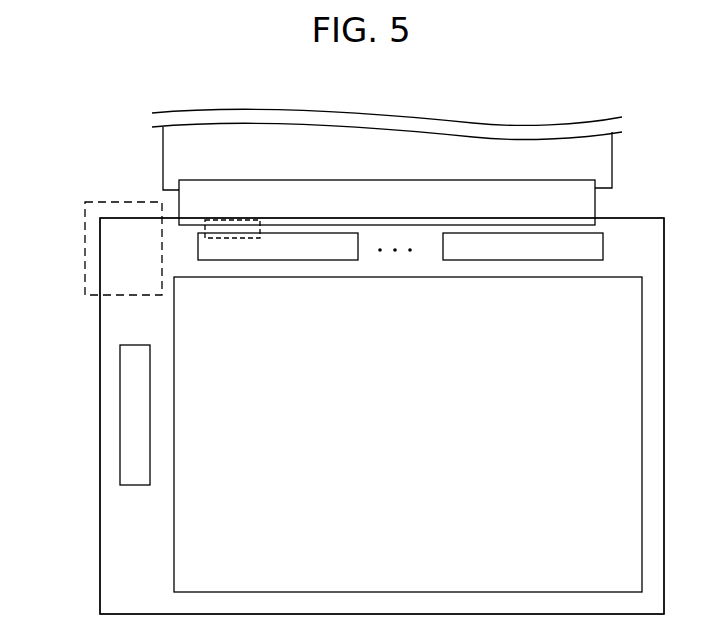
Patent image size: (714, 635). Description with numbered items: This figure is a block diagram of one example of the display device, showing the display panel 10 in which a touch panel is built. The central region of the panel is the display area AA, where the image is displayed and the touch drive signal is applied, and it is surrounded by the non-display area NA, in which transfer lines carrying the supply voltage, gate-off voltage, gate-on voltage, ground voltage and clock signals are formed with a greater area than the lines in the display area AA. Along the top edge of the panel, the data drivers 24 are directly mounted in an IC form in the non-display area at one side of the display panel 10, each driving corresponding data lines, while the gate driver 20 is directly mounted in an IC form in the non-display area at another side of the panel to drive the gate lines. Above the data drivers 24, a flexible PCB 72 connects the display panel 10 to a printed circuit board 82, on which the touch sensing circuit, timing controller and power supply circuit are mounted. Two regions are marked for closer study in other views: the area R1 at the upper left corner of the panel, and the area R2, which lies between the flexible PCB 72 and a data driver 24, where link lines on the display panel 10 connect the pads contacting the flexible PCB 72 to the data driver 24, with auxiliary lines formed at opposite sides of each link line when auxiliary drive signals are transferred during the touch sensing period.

The display panel 10 is at (656, 203).
The gate driver 20 is at (135, 415).
The data drivers 24 is at (400, 246).
The flexible PCB 72 is at (387, 202).
The printed circuit board 82 is at (387, 149).
The display area AA is at (190, 540).
The non-display area NA is at (133, 553).
The area R1 is at (127, 200).
The area R2 is at (222, 222).